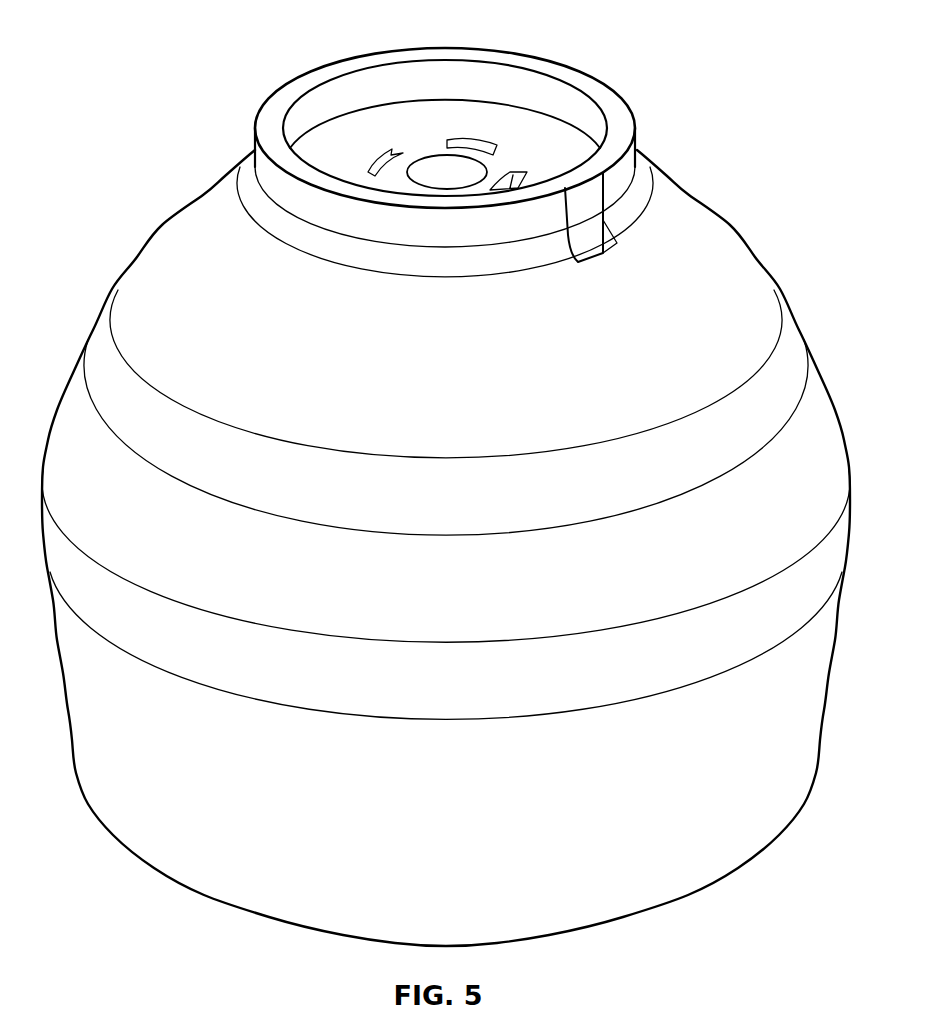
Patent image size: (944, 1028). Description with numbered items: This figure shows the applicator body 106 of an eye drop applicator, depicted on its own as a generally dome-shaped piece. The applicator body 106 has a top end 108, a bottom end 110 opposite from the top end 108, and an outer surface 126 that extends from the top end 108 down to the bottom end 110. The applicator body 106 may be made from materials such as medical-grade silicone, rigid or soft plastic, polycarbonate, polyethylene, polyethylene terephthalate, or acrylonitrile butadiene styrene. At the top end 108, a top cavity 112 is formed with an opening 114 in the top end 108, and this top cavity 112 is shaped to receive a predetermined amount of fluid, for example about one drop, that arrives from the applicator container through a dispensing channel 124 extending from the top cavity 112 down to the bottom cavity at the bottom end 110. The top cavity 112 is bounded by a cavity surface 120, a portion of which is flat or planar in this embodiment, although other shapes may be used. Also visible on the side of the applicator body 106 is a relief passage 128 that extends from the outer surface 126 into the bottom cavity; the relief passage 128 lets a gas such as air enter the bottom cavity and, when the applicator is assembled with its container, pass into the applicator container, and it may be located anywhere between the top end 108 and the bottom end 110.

The applicator body 106 is at (464, 476).
The top end 108 is at (490, 134).
The bottom end 110 is at (793, 797).
The top cavity 112 is at (345, 128).
The opening 114 is at (375, 79).
The cavity surface 120 is at (545, 90).
The dispensing channel 124 is at (450, 167).
The outer surface 126 is at (743, 317).
The relief passage 128 is at (587, 218).